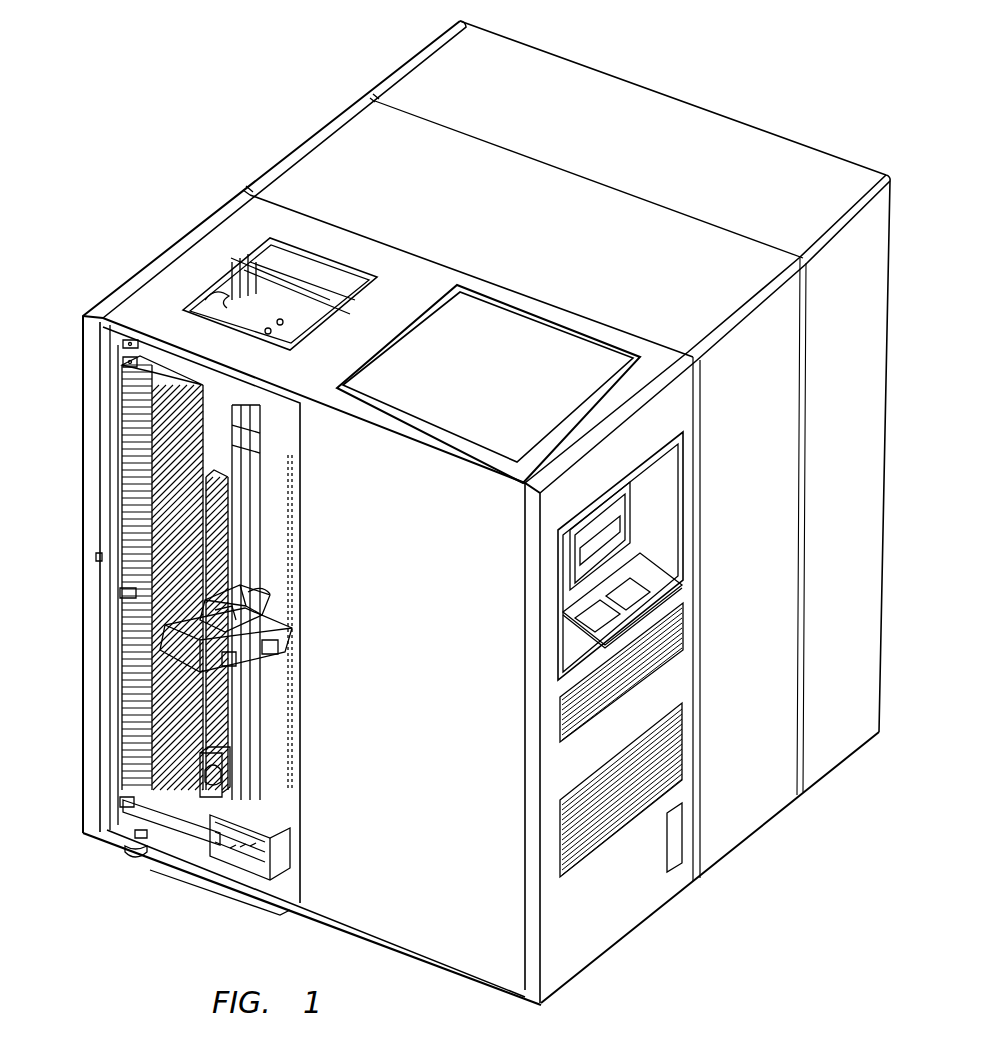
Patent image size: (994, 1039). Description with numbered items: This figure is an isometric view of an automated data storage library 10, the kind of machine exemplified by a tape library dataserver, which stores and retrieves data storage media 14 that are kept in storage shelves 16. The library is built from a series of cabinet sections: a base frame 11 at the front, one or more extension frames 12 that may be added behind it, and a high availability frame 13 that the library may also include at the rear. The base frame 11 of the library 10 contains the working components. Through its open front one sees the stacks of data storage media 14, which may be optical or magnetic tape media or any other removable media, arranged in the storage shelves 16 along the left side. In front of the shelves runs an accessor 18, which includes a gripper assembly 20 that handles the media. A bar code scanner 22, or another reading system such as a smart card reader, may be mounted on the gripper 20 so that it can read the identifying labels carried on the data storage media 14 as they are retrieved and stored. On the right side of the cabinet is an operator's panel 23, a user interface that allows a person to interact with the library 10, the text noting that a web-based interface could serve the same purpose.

The automated data storage library 10 is at (148, 182).
The base frame 11 is at (360, 339).
The extension frame 12 is at (492, 222).
The high availability frame 13 is at (613, 75).
The data storage media 14 is at (135, 427).
The storage shelves 16 is at (92, 553).
The accessor 18 is at (208, 800).
The gripper assembly 20 is at (270, 660).
The bar code scanner 22 is at (272, 602).
The operator's panel 23 is at (660, 587).